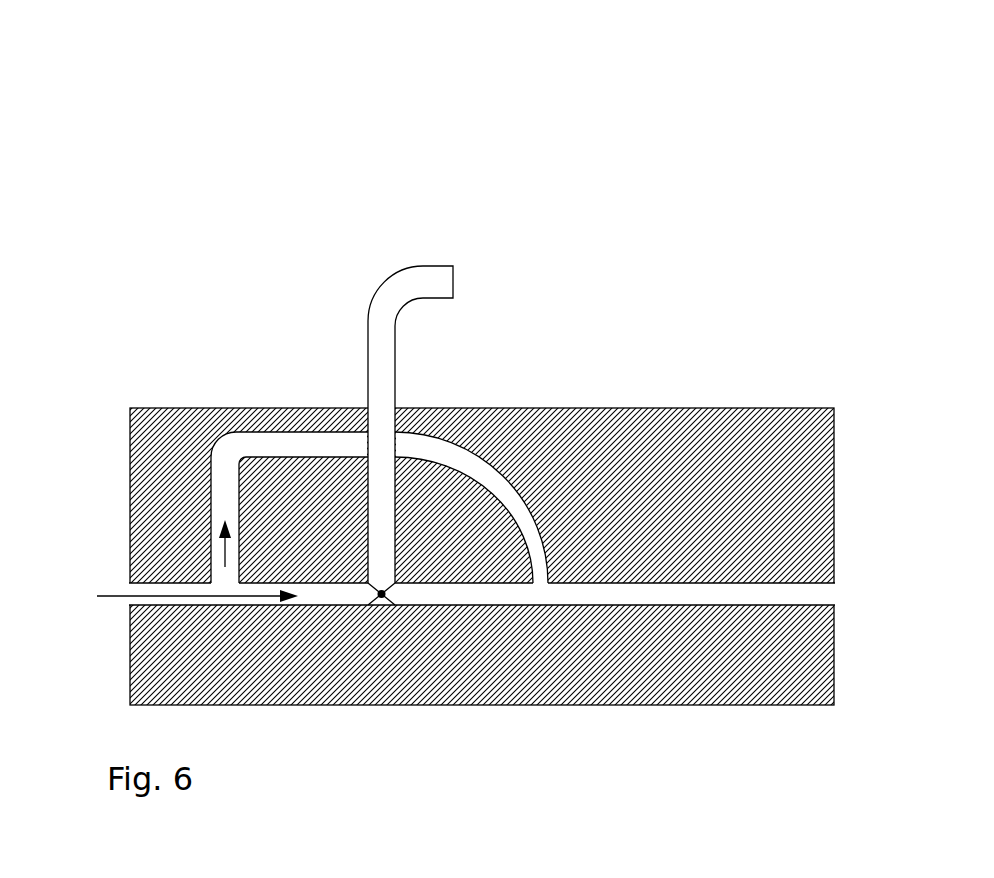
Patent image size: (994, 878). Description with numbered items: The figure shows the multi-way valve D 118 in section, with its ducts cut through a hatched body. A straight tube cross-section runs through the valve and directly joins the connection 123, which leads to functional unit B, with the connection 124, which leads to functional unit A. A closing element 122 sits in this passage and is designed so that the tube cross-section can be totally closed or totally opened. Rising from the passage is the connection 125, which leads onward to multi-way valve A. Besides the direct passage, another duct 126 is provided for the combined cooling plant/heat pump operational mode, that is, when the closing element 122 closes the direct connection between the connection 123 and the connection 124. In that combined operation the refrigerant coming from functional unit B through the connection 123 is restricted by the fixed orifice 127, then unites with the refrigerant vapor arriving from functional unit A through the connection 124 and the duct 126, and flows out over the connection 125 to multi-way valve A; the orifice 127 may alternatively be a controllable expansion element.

The multi-way valve D 118 is at (482, 357).
The closing element 122 is at (383, 596).
The connection 123 is at (822, 588).
The connection 124 is at (103, 590).
The connection 125 is at (420, 277).
The duct 126 is at (262, 442).
The fixed orifice 127 is at (440, 437).